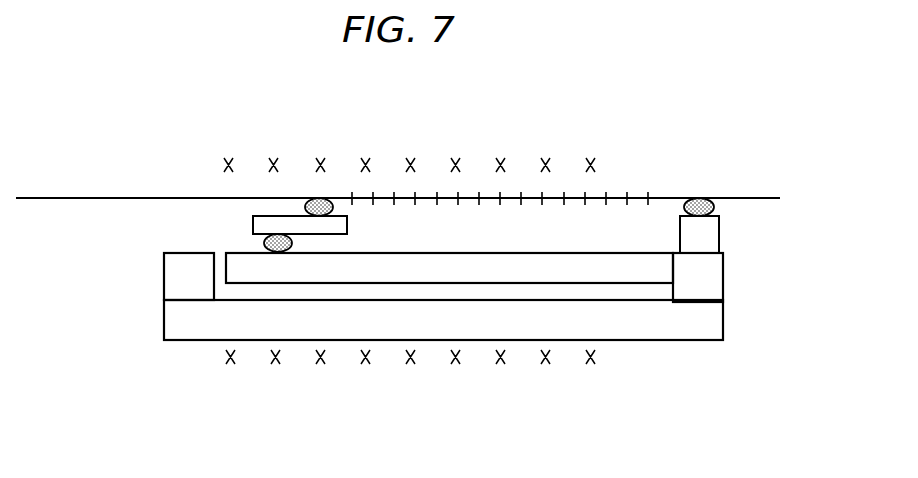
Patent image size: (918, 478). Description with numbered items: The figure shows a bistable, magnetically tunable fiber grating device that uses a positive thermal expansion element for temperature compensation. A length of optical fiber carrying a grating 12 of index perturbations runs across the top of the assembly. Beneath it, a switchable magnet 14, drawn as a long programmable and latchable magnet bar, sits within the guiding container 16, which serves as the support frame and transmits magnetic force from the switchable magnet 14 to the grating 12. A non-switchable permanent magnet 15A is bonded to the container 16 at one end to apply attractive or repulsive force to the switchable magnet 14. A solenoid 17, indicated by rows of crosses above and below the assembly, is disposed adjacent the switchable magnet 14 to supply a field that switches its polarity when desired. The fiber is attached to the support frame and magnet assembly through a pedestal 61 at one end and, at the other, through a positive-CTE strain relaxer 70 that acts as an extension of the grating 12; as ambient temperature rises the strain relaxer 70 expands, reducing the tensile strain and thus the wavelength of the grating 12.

The grating 12 is at (432, 197).
The switchable magnet 14 is at (418, 284).
The non-switchable magnet 15A is at (164, 272).
The guiding container 16 is at (723, 321).
The electromagnet (solenoid) 17 is at (592, 156).
The pedestal 61 is at (719, 231).
The positive-CTE strain relaxer 70 is at (262, 216).